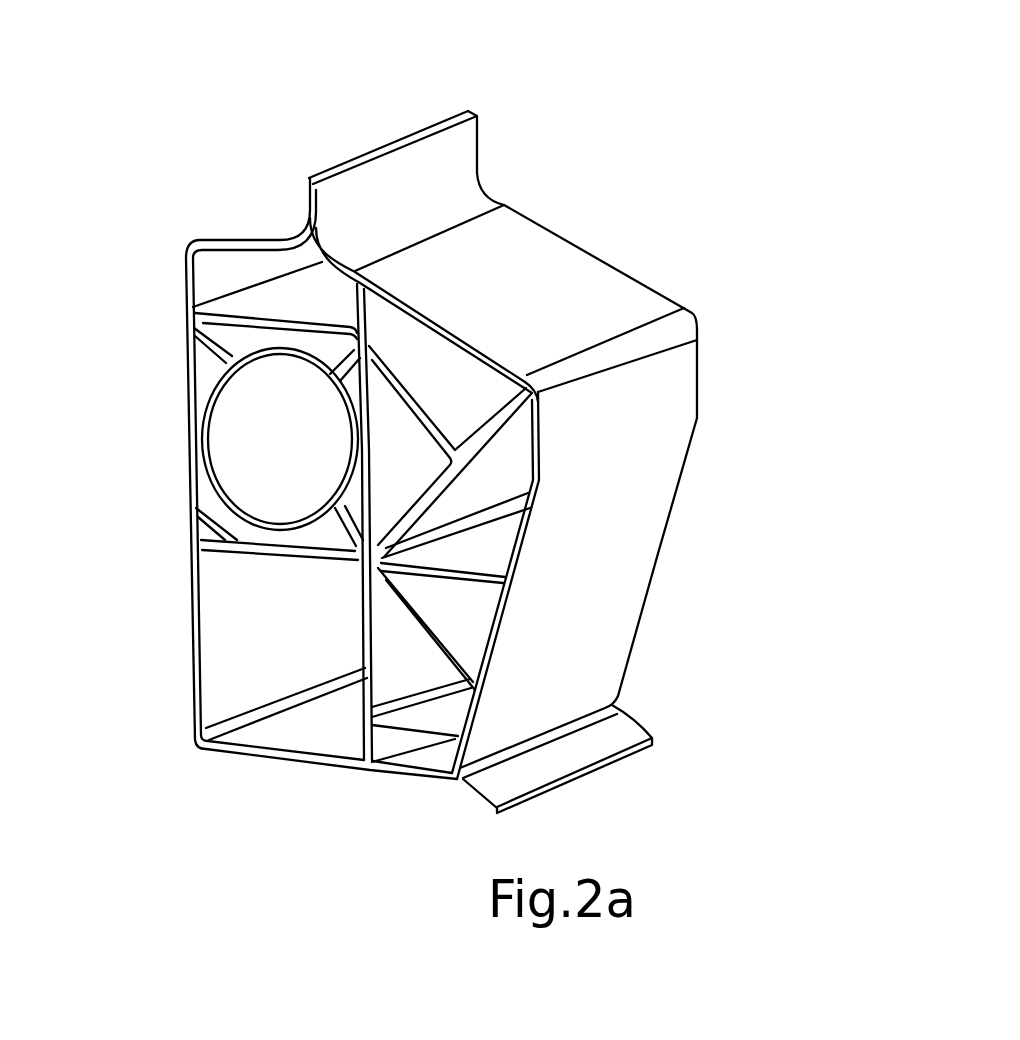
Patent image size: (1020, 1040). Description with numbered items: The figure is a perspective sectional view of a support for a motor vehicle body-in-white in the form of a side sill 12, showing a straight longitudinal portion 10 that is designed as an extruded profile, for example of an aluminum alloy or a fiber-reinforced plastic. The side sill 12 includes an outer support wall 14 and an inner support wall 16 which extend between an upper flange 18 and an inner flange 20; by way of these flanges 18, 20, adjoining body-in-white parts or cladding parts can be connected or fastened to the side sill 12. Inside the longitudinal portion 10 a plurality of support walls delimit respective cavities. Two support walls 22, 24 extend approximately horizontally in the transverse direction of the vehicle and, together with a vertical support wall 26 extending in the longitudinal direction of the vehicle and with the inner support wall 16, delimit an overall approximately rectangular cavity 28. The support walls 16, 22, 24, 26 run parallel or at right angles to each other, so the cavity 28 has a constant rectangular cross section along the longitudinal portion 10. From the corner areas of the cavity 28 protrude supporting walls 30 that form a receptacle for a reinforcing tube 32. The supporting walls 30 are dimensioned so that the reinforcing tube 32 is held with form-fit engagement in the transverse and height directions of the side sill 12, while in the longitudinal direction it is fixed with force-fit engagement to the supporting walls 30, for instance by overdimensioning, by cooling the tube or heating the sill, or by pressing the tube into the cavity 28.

The longitudinal portion 10 is at (577, 290).
The side sill 12 is at (567, 100).
The outer support wall 14 is at (668, 535).
The inner support wall 16 is at (193, 713).
The upper flange 18 is at (453, 133).
The inner flange 20 is at (603, 747).
The support wall 22 is at (267, 310).
The support wall 24 is at (285, 535).
The vertical support wall 26 is at (400, 478).
The cavity 28 is at (232, 407).
The supporting walls 30 is at (370, 350).
The reinforcing tube 32 is at (200, 456).